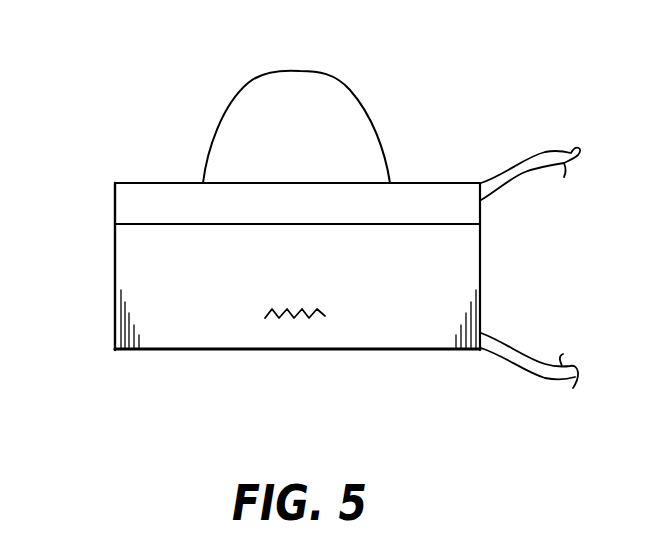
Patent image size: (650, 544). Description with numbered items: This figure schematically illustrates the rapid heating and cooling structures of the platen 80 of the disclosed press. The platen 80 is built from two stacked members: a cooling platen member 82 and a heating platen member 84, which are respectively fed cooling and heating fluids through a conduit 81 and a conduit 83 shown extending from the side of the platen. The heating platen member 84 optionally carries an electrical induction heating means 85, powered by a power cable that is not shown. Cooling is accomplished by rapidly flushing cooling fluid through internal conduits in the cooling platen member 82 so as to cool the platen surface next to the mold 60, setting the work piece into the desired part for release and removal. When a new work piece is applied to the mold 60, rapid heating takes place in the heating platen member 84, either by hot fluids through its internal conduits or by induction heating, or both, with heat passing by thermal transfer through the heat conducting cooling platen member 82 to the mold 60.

The mold 60 is at (300, 72).
The platen 80 is at (497, 209).
The conduit 81 is at (537, 151).
The cooling platen member 82 is at (114, 217).
The conduit 83 is at (532, 380).
The heating platen member 84 is at (113, 317).
The electrical induction heating means 85 is at (312, 318).